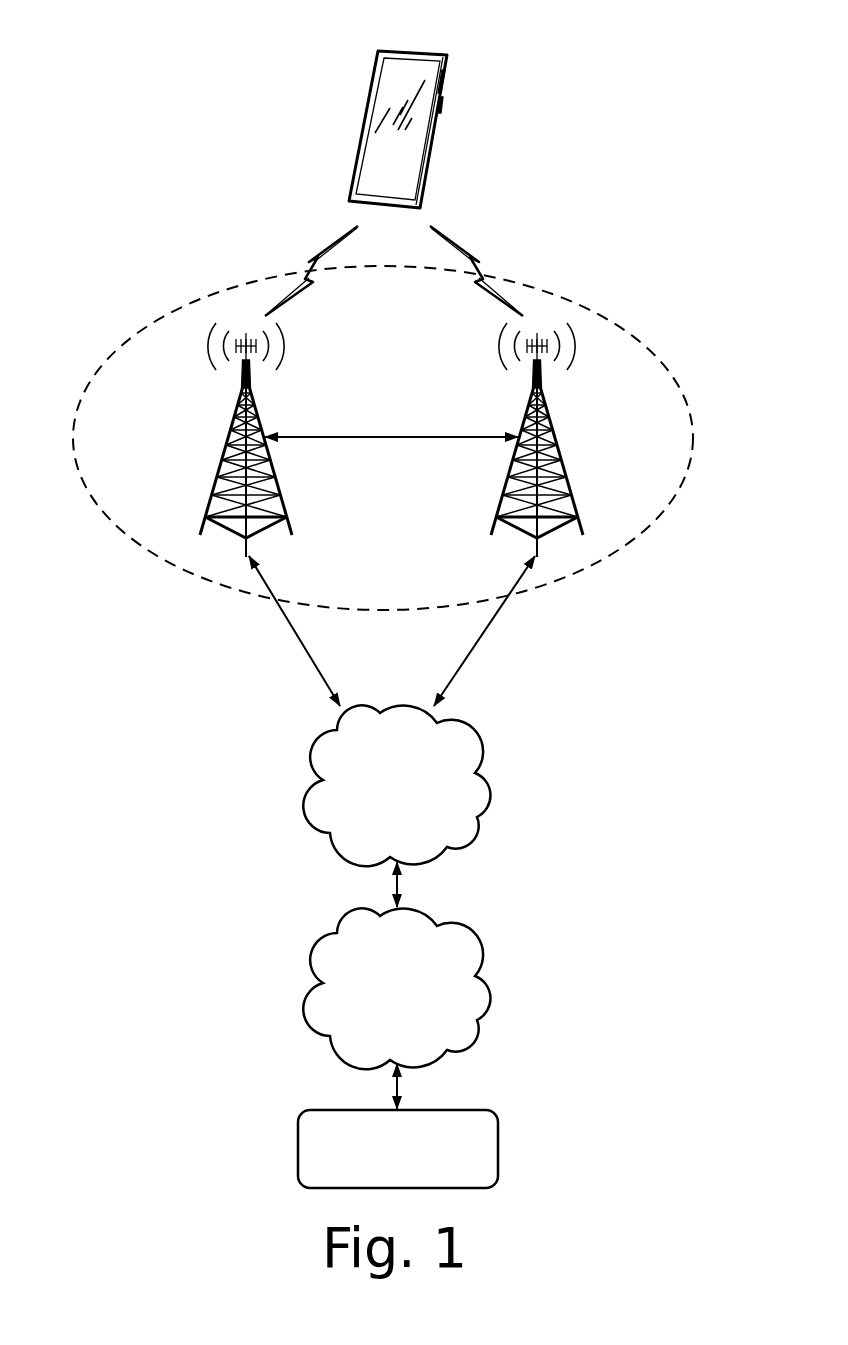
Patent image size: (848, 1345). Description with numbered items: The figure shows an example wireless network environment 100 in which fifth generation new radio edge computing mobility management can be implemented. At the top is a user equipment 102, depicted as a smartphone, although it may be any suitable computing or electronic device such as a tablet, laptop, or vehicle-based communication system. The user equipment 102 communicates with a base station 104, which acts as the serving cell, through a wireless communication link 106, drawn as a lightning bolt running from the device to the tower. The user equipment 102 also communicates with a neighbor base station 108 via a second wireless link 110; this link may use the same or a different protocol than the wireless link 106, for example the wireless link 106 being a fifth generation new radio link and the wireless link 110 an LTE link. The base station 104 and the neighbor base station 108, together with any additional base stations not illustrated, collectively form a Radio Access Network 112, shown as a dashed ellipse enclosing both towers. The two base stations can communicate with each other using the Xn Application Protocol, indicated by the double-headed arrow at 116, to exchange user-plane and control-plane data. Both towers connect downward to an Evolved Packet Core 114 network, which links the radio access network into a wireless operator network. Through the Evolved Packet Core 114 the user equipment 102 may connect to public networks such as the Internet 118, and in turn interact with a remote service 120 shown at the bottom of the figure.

The environment 100 is at (117, 40).
The user equipment 102 is at (454, 70).
The base station 104 is at (226, 420).
The wireless communication link 106 is at (316, 254).
The neighbor base station 108 is at (554, 418).
The wireless link 110 is at (474, 253).
The Radio Access Network 112 is at (667, 367).
The Evolved Packet Core 114 is at (381, 824).
The Xn Application Protocol 116 is at (359, 431).
The Internet 118 is at (381, 1001).
The remote service 120 is at (381, 1170).